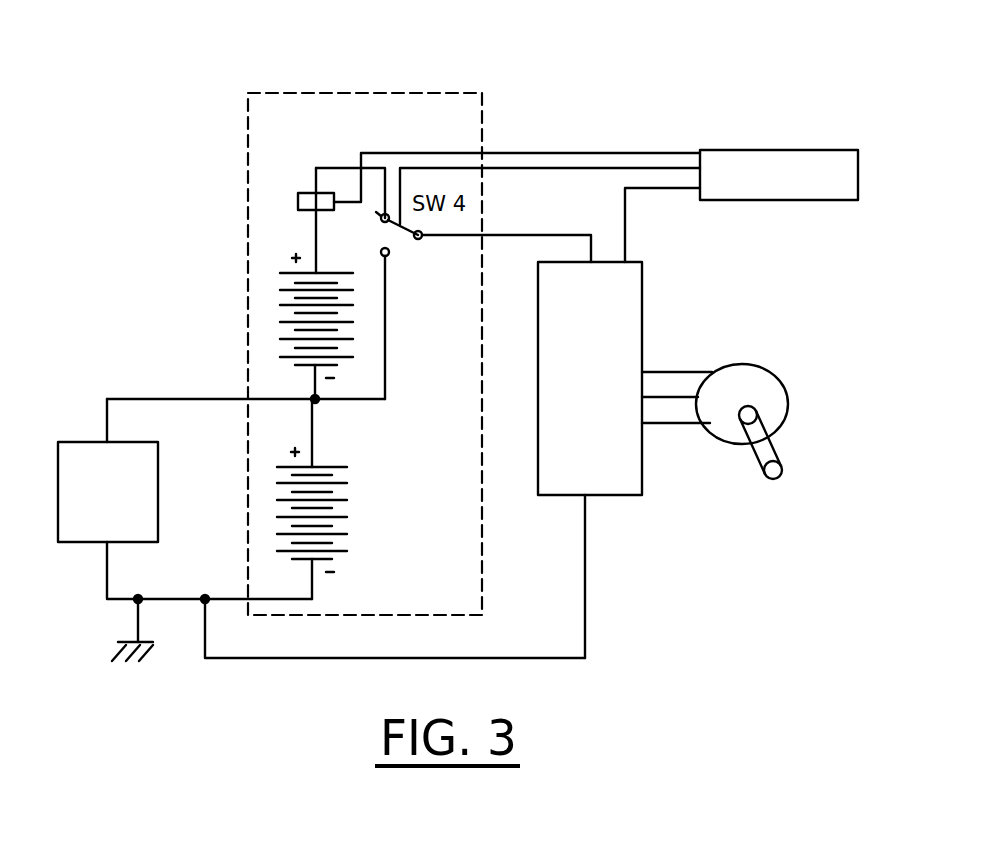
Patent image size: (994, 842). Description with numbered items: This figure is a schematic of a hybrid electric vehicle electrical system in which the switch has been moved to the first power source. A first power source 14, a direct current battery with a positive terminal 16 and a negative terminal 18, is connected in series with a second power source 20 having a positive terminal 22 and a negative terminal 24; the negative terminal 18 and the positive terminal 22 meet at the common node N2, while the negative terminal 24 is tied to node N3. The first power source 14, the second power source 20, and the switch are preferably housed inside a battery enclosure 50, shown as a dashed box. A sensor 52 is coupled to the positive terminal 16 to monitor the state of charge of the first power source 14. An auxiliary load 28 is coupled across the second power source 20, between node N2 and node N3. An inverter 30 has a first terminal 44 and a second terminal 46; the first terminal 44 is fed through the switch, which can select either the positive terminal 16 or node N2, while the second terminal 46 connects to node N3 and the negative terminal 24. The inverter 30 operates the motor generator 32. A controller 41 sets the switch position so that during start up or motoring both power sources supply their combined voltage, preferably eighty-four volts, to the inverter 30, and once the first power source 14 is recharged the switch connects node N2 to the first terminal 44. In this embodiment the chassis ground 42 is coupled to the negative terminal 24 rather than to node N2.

The battery enclosure 50 is at (422, 92).
The sensor 52 is at (298, 197).
The positive terminal 16 is at (314, 230).
The first power source 14 is at (285, 284).
The second node N2 is at (313, 398).
The negative terminal 18 is at (315, 383).
The auxiliary load 28 is at (75, 441).
The positive terminal 22 is at (312, 447).
The second power source 20 is at (340, 508).
The negative terminal 24 is at (312, 585).
The chassis ground 42 is at (134, 608).
The node N3 is at (201, 604).
The controller 41 is at (782, 148).
The first terminal 44 is at (567, 233).
The inverter 30 is at (645, 290).
The motor generator 32 is at (790, 405).
The second terminal 46 is at (590, 548).